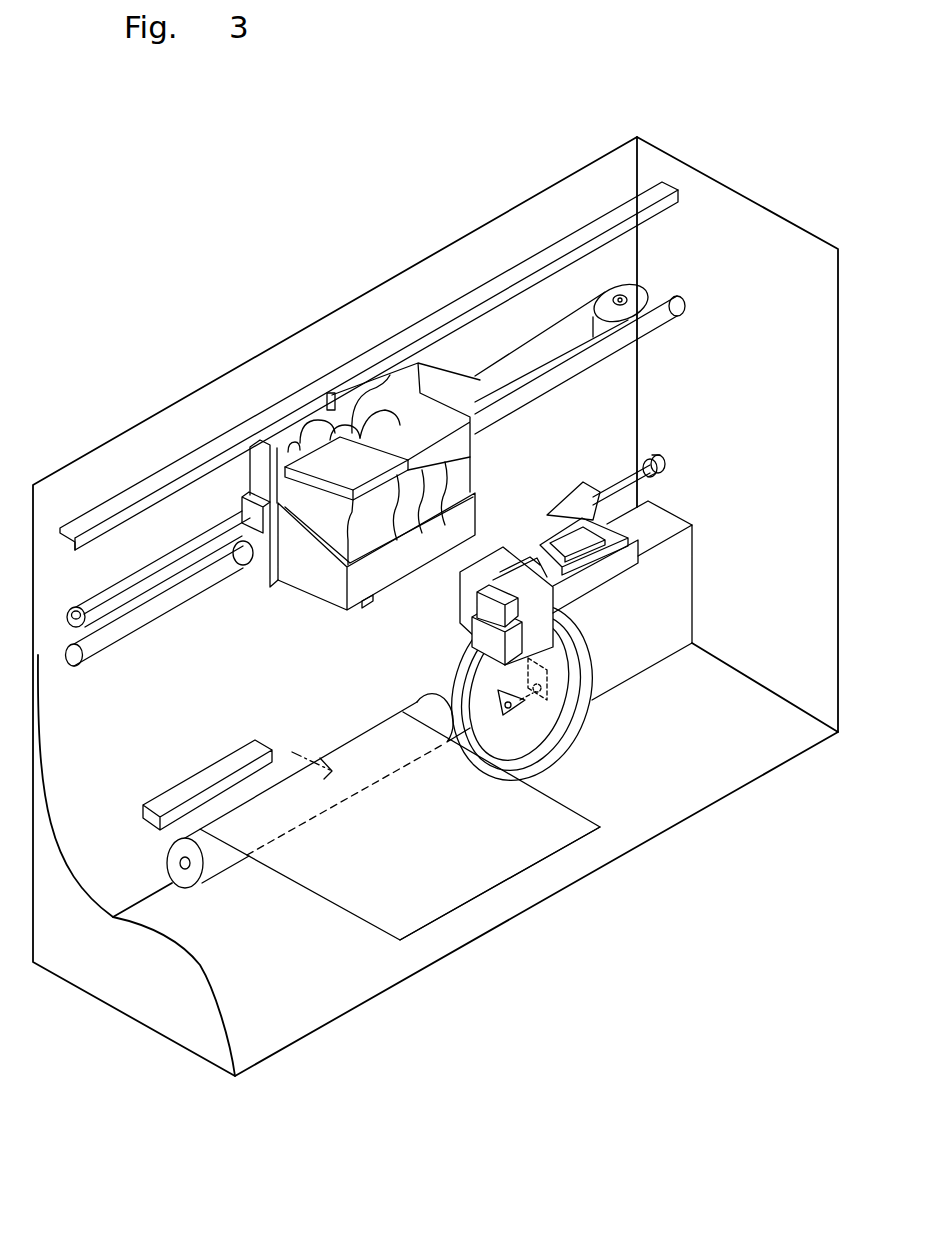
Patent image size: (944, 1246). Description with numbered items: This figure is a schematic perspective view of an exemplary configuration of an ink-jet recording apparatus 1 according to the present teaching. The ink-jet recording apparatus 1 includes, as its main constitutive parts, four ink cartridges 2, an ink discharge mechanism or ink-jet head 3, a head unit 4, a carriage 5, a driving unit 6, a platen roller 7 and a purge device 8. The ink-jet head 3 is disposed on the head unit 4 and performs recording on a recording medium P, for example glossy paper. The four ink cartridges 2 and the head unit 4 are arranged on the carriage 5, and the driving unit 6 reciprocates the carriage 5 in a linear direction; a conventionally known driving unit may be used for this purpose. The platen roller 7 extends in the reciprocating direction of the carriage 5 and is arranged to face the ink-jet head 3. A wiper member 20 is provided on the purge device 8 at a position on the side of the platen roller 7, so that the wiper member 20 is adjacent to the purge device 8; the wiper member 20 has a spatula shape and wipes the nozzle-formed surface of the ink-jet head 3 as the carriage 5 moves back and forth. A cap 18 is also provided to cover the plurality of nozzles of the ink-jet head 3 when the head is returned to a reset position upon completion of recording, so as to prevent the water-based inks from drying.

The ink-jet recording apparatus 1 is at (332, 171).
The ink cartridges 2 is at (385, 420).
The ink discharge mechanism (ink-jet head) 3 is at (418, 575).
The head unit 4 is at (398, 609).
The carriage 5 is at (260, 463).
The driving unit 6 is at (662, 170).
The platen roller 7 is at (222, 855).
The purge device 8 is at (750, 630).
The cap 18 is at (617, 523).
The wiper member 20 is at (497, 615).
The recording medium P is at (388, 911).